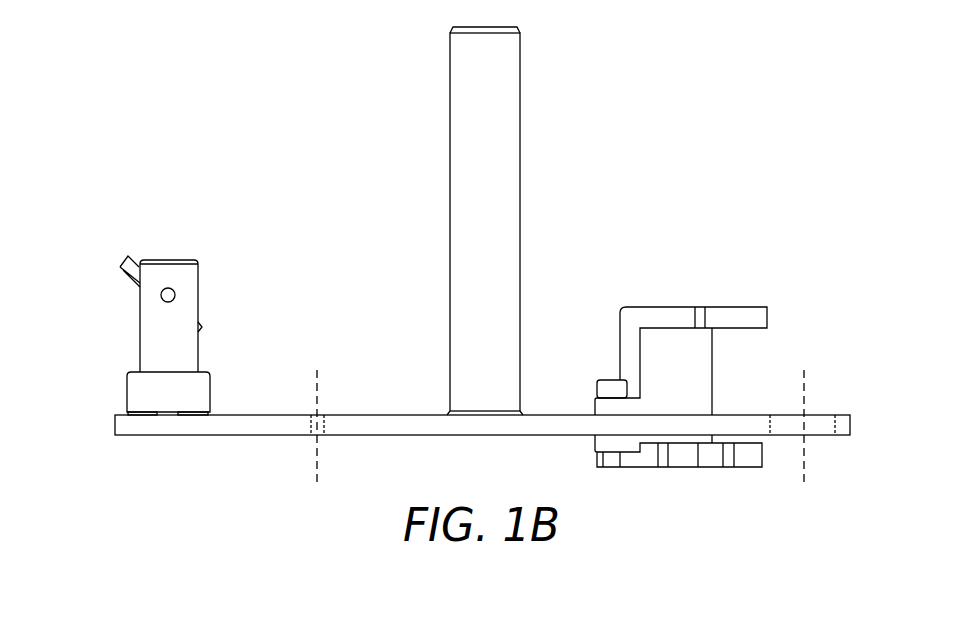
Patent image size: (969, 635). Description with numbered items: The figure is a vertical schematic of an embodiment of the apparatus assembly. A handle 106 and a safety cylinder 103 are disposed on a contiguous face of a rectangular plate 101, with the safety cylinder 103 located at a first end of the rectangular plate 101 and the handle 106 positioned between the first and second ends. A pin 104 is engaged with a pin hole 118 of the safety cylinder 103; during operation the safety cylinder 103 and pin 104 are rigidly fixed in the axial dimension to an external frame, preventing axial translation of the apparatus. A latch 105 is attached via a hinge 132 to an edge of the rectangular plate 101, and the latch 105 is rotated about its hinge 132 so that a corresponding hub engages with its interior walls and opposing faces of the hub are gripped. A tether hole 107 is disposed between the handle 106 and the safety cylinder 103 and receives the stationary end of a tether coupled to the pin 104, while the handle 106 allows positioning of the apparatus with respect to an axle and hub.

The rectangular plate 101 is at (410, 425).
The safety cylinder 103 is at (160, 342).
The pin 104 is at (118, 258).
The latch 105 is at (658, 293).
The handle 106 is at (467, 112).
The tether hole 107 is at (308, 445).
The pin hole 118 is at (177, 295).
The hinge 132 is at (612, 475).